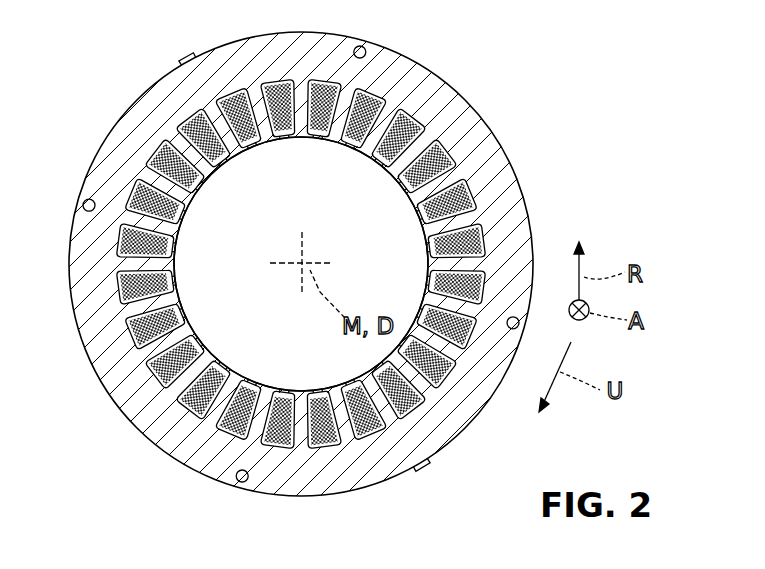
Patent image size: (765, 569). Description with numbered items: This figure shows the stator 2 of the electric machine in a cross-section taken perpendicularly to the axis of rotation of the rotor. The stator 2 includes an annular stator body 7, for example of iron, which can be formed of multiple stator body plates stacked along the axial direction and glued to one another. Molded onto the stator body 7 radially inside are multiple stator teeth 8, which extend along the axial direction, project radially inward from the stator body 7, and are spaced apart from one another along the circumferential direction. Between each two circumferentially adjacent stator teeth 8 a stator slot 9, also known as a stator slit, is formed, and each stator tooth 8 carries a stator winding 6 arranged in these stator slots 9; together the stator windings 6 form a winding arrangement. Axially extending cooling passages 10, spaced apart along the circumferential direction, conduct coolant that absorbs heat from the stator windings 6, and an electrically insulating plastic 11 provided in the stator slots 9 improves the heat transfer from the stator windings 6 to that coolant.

The stator 2 is at (382, 284).
The stator winding 6 is at (182, 120).
The stator body 7 is at (448, 77).
The stator tooth 8 is at (277, 143).
The stator slot 9 is at (236, 148).
The cooling passage 10 is at (193, 113).
The electrically insulating plastic 11 is at (301, 264).